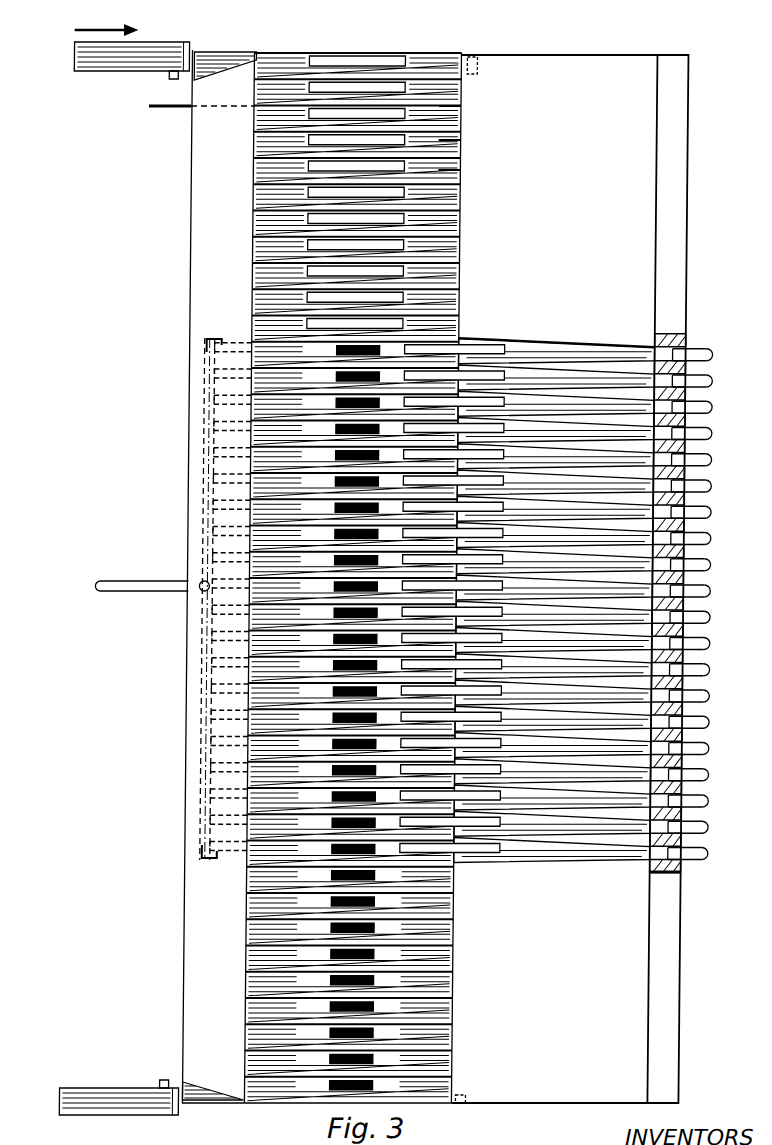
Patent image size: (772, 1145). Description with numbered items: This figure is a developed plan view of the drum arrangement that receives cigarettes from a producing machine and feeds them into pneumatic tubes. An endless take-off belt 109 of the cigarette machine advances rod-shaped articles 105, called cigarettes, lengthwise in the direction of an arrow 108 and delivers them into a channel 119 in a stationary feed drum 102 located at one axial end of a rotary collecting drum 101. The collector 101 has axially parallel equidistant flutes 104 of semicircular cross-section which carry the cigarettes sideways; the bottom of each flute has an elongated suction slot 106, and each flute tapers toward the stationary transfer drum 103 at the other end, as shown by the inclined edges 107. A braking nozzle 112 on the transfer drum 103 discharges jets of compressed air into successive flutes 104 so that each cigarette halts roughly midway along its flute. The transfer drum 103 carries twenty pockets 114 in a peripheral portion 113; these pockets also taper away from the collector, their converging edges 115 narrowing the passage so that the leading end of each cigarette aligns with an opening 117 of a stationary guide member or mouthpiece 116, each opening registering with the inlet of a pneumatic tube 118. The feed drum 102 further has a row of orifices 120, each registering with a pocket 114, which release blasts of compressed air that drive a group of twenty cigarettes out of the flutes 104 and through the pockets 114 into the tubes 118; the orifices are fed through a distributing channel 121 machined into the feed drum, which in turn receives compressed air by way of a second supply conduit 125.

The rotary collecting member or drum 101 is at (280, 55).
The stationary feed drum 102 is at (205, 175).
The stationary transfer member or drum 103 is at (640, 128).
The pockets or flutes 104 is at (462, 168).
The rod-shaped articles 105 is at (383, 73).
The suction slot or duct 106 is at (305, 365).
The edges 107 is at (258, 101).
The arrow 108 is at (95, 27).
The endless take-off belt 109 is at (128, 60).
The braking nozzle 112 is at (474, 57).
The portion of the periphery 113 is at (620, 340).
The pockets or flutes 114 is at (523, 372).
The edges 115 is at (578, 353).
The stationary guide member or mouthpiece 116 is at (668, 352).
The opening 117 is at (692, 345).
The pneumatic tube 118 is at (704, 347).
The channel 119 is at (218, 56).
The orifices 120 is at (215, 343).
The distributing channel 121 is at (206, 650).
The second supply conduit 125 is at (106, 586).